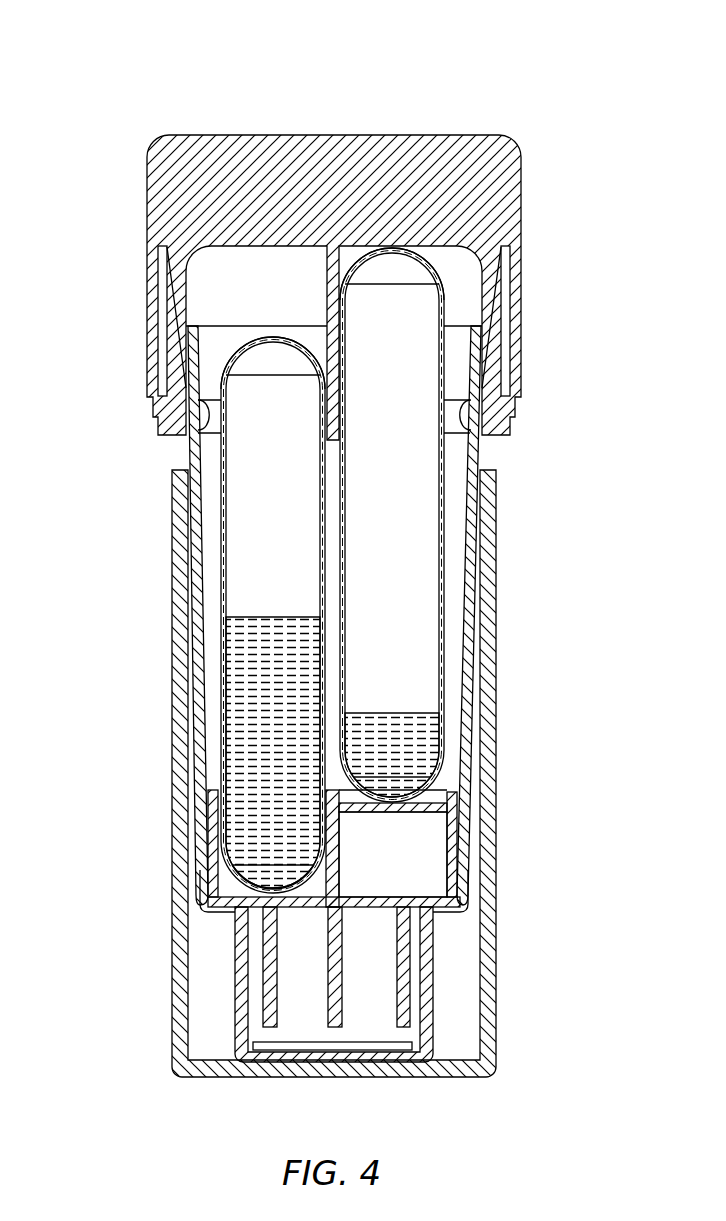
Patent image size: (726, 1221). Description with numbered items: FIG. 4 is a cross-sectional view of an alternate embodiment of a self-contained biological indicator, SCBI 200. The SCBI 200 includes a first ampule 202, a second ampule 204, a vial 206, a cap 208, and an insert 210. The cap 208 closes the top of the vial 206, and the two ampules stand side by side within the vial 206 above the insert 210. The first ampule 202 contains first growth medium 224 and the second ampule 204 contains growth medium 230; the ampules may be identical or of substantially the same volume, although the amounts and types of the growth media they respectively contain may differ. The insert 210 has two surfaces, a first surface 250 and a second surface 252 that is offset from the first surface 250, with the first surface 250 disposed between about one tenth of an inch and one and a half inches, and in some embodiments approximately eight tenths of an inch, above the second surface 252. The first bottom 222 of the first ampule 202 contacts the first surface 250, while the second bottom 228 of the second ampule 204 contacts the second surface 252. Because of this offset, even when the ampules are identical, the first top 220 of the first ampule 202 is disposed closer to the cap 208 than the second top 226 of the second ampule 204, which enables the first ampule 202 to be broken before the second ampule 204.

The SCBI 200 is at (114, 52).
The first ampule 202 is at (477, 525).
The second ampule 204 is at (177, 600).
The vial 206 is at (470, 618).
The cap 208 is at (485, 165).
The insert 210 is at (455, 905).
The first top 220 is at (392, 263).
The first bottom 222 is at (428, 788).
The first growth medium 224 is at (412, 737).
The second top 226 is at (265, 362).
The second bottom 228 is at (282, 872).
The growth medium 230 is at (255, 668).
The first surface 250 is at (455, 815).
The second surface 252 is at (243, 878).